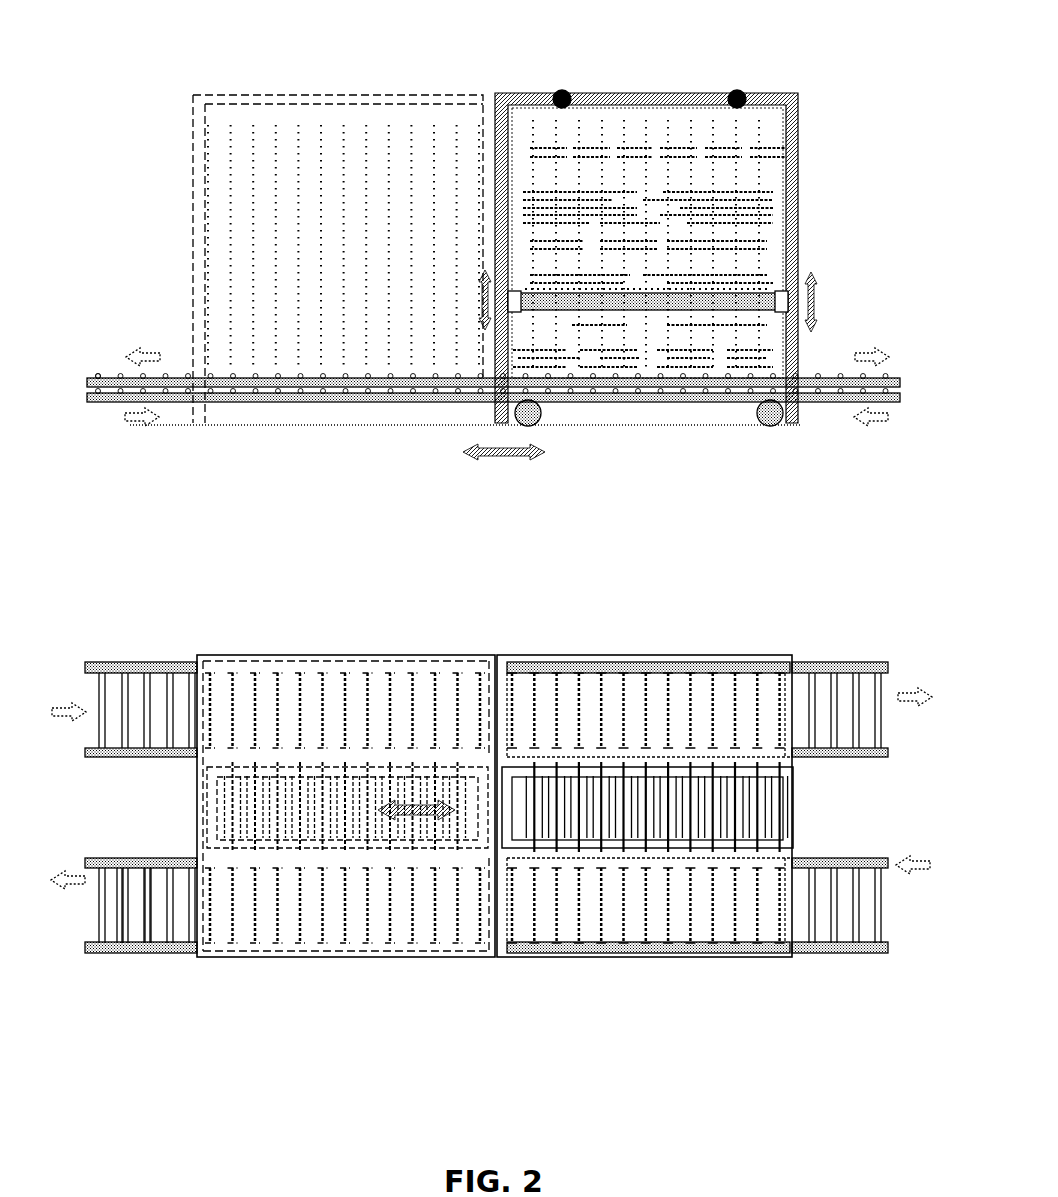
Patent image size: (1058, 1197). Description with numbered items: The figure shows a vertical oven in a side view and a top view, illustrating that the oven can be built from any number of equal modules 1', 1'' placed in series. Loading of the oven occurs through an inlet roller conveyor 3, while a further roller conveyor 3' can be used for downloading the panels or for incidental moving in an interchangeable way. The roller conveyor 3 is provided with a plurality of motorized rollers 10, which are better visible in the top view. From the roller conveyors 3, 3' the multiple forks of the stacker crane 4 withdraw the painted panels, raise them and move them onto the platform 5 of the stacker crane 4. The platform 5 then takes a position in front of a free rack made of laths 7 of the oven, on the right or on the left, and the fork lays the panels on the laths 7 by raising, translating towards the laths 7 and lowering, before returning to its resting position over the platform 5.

The module 1'' is at (270, 522).
The module 1' is at (718, 521).
The laths 7 is at (647, 128).
The platform 5 is at (740, 300).
The roller conveyor 3' is at (504, 670).
The inlet roller conveyor 3 is at (497, 920).
The stacker crane 4 is at (800, 790).
The motorized roller 10 is at (148, 905).